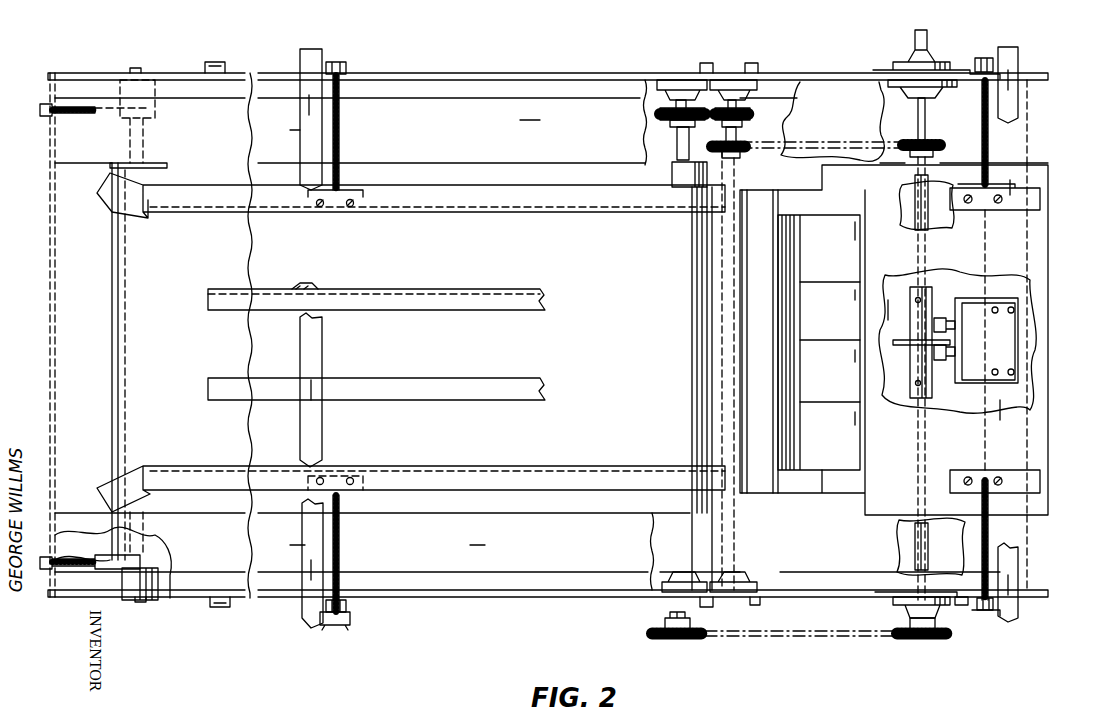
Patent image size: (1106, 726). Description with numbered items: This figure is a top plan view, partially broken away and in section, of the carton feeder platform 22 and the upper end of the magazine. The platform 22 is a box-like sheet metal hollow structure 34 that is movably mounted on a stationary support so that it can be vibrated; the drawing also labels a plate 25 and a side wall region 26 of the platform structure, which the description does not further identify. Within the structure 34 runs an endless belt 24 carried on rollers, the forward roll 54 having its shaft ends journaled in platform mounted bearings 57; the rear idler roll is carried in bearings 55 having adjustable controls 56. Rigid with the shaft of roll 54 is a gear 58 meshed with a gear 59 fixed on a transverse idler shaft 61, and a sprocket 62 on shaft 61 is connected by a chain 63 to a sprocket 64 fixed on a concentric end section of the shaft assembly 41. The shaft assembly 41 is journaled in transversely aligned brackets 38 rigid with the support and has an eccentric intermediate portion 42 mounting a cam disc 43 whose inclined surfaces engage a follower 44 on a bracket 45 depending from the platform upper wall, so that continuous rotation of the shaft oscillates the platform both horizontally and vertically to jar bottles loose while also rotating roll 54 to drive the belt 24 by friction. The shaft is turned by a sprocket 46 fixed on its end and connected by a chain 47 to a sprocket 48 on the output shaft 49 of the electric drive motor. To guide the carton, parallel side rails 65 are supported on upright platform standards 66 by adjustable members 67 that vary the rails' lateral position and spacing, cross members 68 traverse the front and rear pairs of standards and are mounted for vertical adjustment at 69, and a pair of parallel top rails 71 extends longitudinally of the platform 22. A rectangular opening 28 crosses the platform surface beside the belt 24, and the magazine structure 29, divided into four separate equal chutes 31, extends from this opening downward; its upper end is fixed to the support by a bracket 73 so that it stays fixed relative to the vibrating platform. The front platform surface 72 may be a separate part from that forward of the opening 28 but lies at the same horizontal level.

The feeder platform 22 is at (446, 116).
The belt 24 is at (579, 512).
The mounting plate 25 is at (142, 163).
The upper side wall 26 is at (508, 151).
The rectangular opening 28 is at (746, 322).
The magazine structure 29 is at (867, 257).
The chutes 31 is at (814, 259).
The box-like sheet metal hollow structure 34 is at (553, 78).
The brackets 38 is at (962, 606).
The shaft assembly 41 is at (925, 117).
The eccentric intermediate portion 42 is at (930, 215).
The cam disc 43 is at (915, 357).
The follower 44 is at (938, 318).
The bracket 45 is at (1010, 350).
The sprocket 46 is at (940, 639).
The chain 47 is at (727, 640).
The sprocket 48 is at (676, 639).
The output shaft 49 is at (665, 620).
The forward roll 54 is at (685, 170).
The bearings 55 is at (148, 585).
The adjustable controls 56 is at (65, 115).
The bearings 57 is at (680, 85).
The gear 58 is at (660, 115).
The gear 59 is at (745, 119).
The idler shaft 61 is at (735, 145).
The sprocket 62 is at (706, 141).
The chain 63 is at (878, 146).
The sprocket 64 is at (936, 146).
The side rails 65 is at (541, 205).
The platform standards 66 is at (348, 72).
The members 67 is at (339, 130).
The cross members 68 is at (305, 58).
The vertical adjustment 69 is at (332, 60).
The top rails 71 is at (437, 385).
The front platform surface 72 is at (1045, 433).
The bracket 73 is at (750, 387).